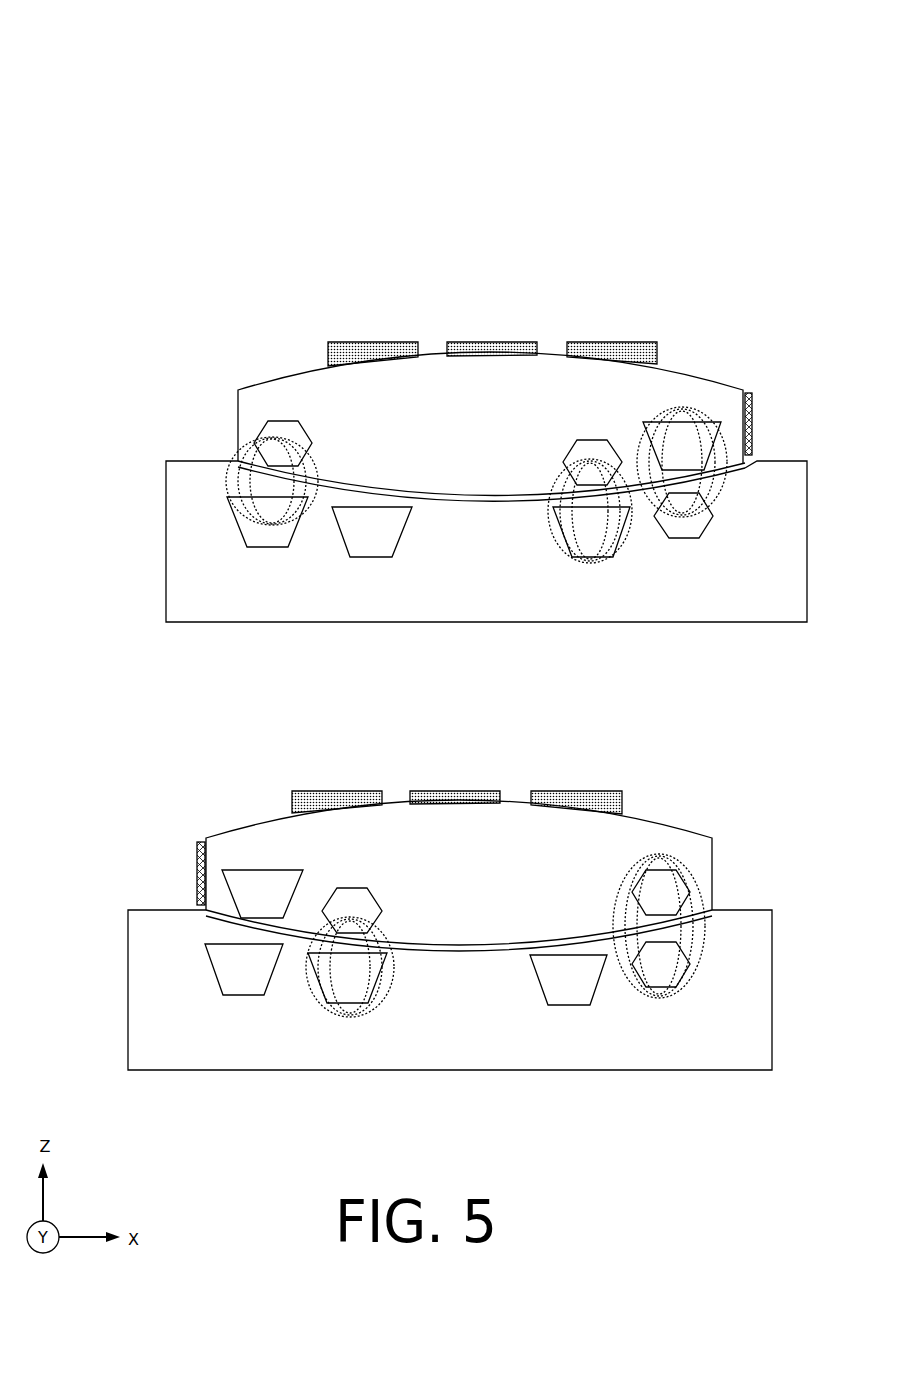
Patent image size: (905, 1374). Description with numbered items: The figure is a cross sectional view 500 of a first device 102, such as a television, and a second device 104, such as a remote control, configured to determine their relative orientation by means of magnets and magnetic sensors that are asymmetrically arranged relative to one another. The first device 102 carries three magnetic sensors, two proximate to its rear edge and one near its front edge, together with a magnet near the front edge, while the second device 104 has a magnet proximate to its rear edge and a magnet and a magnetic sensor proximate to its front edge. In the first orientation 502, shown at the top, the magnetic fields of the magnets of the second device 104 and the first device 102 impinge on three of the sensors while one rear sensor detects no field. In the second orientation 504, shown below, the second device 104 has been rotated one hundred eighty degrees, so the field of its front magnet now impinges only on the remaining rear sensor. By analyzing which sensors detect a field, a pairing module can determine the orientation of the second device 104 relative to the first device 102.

The cross sectional view 500 is at (703, 65).
The first orientation 502 is at (298, 318).
The second orientation 504 is at (298, 769).
The first device 102 is at (435, 1062).
The second device 104 is at (443, 856).